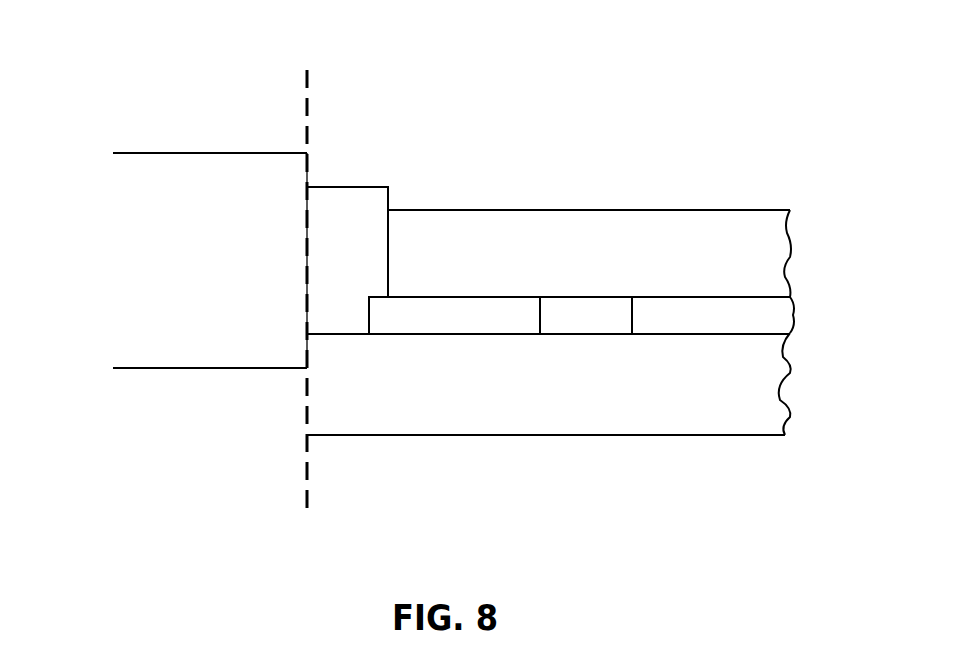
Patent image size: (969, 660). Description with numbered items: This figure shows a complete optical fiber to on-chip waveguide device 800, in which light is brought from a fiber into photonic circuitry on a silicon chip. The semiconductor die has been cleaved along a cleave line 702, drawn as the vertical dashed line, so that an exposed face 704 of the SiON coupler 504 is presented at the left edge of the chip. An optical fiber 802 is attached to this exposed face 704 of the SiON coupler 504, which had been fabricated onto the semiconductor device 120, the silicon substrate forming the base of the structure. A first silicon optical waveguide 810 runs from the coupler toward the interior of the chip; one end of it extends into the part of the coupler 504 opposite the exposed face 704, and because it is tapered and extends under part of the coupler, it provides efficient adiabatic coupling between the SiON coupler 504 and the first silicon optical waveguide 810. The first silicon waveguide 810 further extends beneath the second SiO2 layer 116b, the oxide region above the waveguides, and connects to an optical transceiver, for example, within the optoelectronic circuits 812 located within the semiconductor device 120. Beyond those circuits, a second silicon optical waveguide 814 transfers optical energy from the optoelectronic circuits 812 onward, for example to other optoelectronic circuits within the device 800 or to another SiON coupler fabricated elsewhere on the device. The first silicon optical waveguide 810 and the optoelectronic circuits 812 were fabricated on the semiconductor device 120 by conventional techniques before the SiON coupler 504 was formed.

The complete optical fiber to on-chip waveguide device 800 is at (77, 67).
The optical fiber 802 is at (237, 330).
The cleave line 702 is at (306, 480).
The exposed face 704 is at (307, 234).
The SiON coupler 504 is at (340, 188).
The second SiO2 layer 116b is at (437, 213).
The first silicon optical waveguide 810 is at (497, 297).
The optoelectronic circuits 812 is at (623, 297).
The second silicon optical waveguide 814 is at (743, 335).
The semiconductor device 120 is at (793, 417).